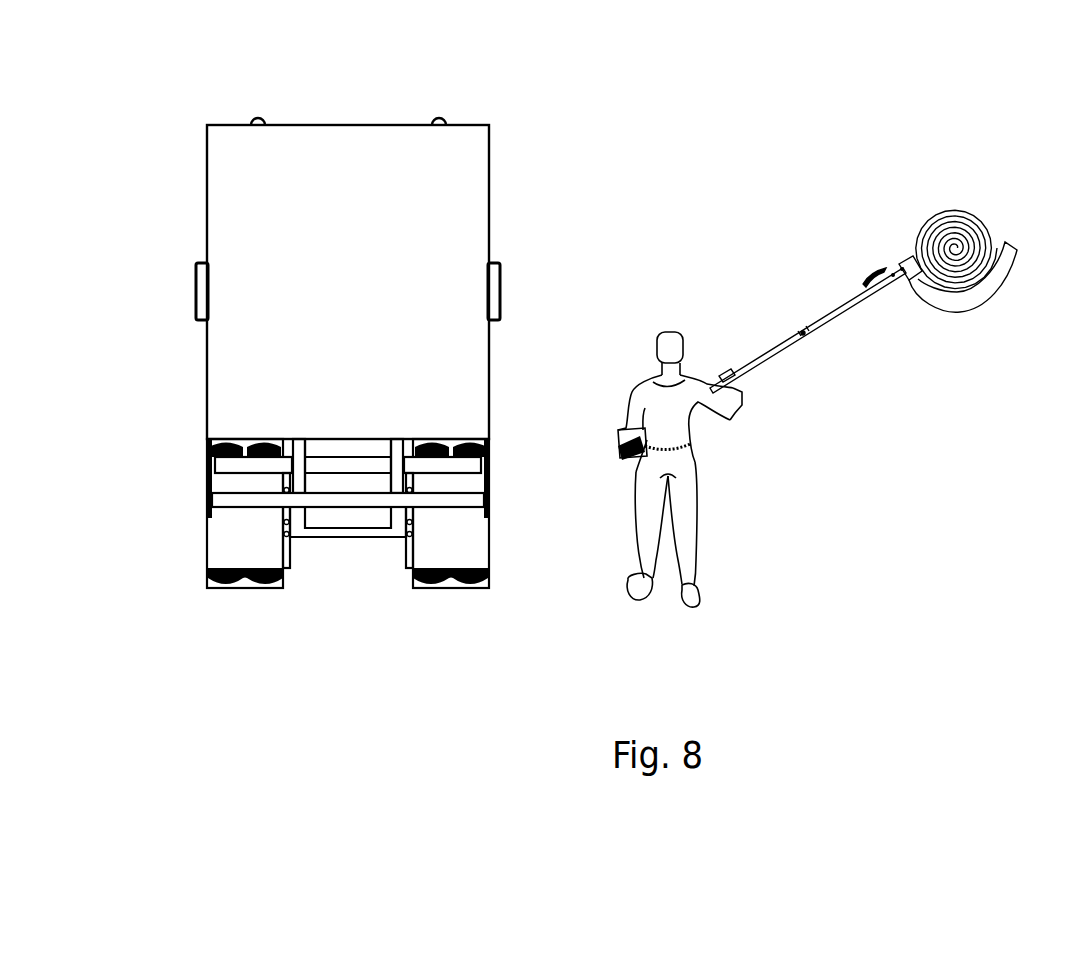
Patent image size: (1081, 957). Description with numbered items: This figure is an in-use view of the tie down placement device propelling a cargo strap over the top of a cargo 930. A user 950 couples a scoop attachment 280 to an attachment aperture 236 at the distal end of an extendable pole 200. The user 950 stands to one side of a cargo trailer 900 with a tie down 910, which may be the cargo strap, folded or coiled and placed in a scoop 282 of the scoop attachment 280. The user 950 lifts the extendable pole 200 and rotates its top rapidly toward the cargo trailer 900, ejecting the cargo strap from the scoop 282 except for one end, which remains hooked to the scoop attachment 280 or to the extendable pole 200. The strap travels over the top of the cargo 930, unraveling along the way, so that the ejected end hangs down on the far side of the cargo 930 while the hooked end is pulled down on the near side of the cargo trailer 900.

The cargo 930 is at (419, 348).
The cargo trailer 900 is at (383, 465).
The user 950 is at (685, 502).
The scoop attachment 280 is at (879, 307).
The extendable pole 200 is at (808, 312).
The attachment aperture 236 is at (895, 272).
The scoop 282 is at (995, 287).
The tie down 910 is at (968, 218).